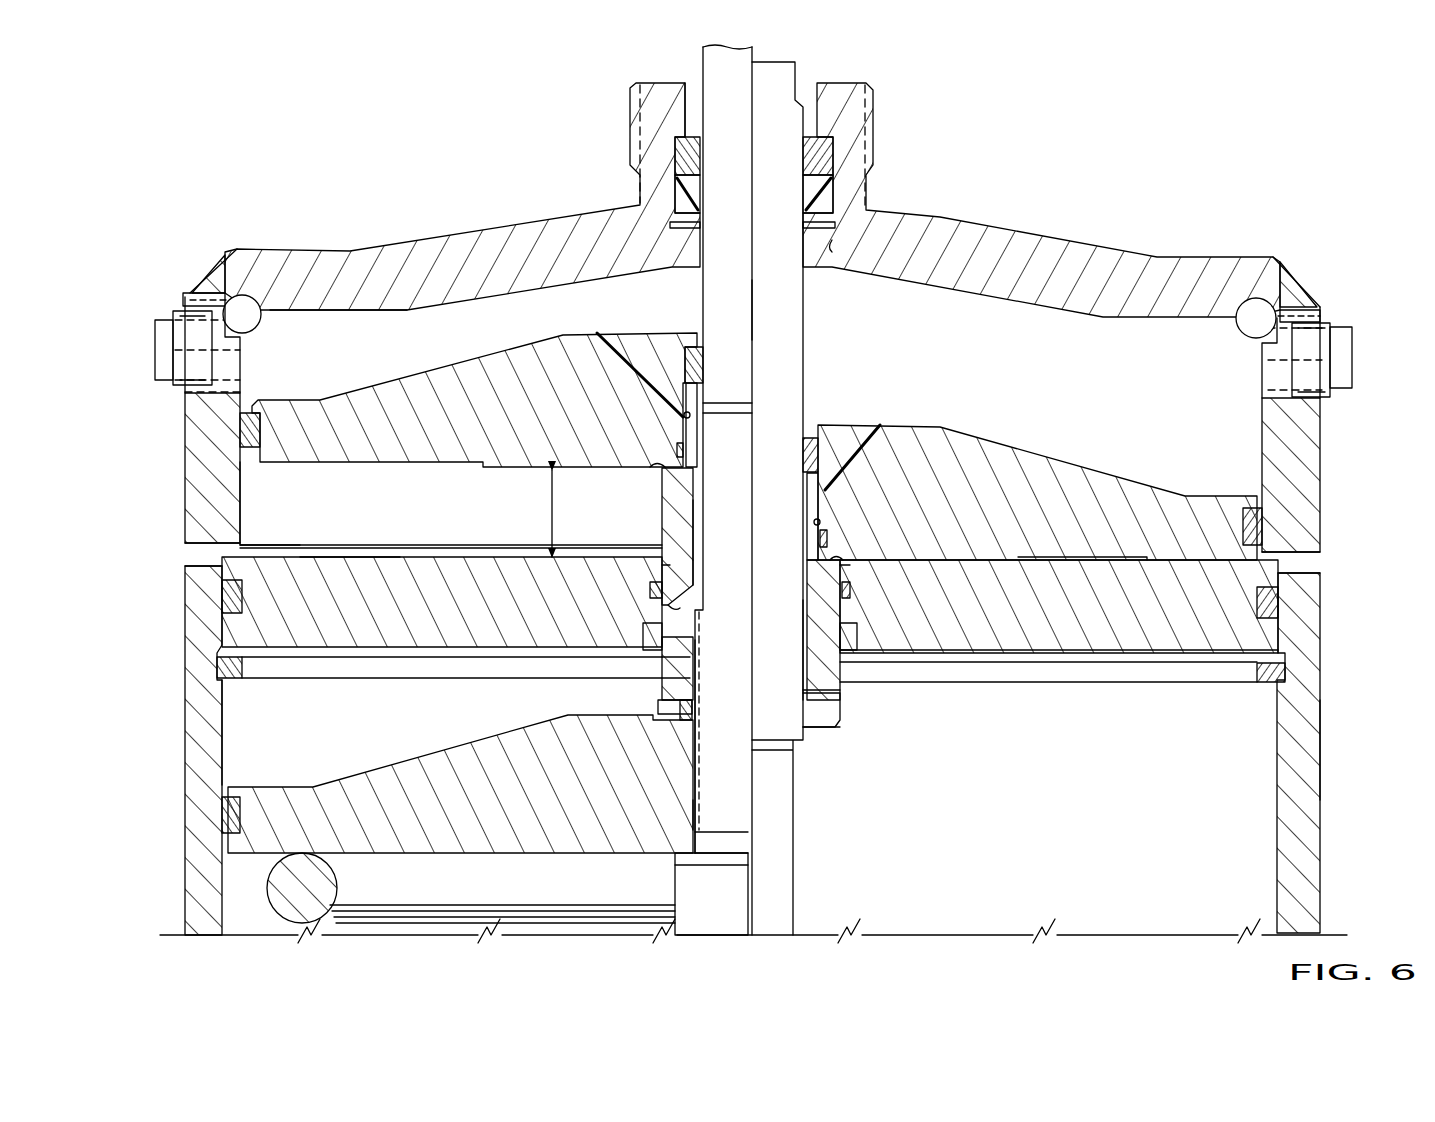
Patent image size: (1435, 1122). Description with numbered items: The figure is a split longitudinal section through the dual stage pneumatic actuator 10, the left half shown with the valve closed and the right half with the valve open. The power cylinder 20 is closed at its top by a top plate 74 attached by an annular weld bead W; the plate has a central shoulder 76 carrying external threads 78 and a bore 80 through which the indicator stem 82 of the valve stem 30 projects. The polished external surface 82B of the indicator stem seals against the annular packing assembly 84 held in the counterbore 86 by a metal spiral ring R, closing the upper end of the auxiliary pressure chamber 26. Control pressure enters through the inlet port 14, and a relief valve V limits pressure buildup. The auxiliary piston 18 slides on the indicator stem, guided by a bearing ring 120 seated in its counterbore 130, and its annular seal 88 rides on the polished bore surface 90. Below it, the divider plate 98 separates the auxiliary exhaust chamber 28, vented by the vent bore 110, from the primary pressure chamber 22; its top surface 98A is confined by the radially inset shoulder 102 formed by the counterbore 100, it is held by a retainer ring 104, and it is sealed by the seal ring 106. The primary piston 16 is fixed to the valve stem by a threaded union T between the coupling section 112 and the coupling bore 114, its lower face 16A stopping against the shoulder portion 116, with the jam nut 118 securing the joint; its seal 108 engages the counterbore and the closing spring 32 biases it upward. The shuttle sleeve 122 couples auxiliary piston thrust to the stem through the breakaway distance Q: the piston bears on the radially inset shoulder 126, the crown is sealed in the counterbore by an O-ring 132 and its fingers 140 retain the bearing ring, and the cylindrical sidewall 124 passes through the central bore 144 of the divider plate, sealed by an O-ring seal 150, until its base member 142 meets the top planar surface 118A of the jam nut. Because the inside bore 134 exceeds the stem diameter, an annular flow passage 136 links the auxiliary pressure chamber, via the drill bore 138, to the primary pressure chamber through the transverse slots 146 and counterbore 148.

The pneumatic actuator 10 is at (1228, 180).
The inlet port 14 is at (1355, 335).
The primary piston 16 is at (495, 742).
The lower face 16A is at (477, 853).
The auxiliary piston 18 is at (520, 352).
The power cylinder 20 is at (1322, 770).
The primary pressure chamber 22 is at (400, 730).
The auxiliary pressure chamber 26 is at (410, 355).
The auxiliary exhaust chamber 28 is at (410, 509).
The valve stem 30 is at (690, 893).
The closing spring 32 is at (265, 880).
The top plate 74 is at (440, 233).
The central shoulder 76 is at (858, 100).
The external threads 78 is at (625, 118).
The bore 80 is at (698, 83).
The indicator stem 82 is at (744, 126).
The external polished surface 82B is at (703, 292).
The annular packing assembly 84 is at (675, 152).
The counterbore 86 is at (832, 248).
The annular seal 88 is at (282, 382).
The internal cylindrical bore surface 90 is at (248, 490).
The divider plate 98 is at (475, 565).
The top surface 98A is at (362, 553).
The counterbore 100 is at (227, 730).
The radially inset shoulder 102 is at (320, 545).
The retainer ring 104 is at (245, 672).
The annular seal ring 106 is at (230, 600).
The annular seal 108 is at (228, 810).
The vent bore 110 is at (193, 557).
The intermediate coupling section 112 is at (740, 728).
The coupling bore 114 is at (693, 795).
The radially inset shoulder portion 116 is at (730, 845).
The jam nut 118 is at (662, 692).
The top planar surface 118A is at (662, 665).
The bearing ring 120 is at (705, 365).
The shuttle sleeve 122 is at (660, 500).
The cylindrical sidewall 124 is at (668, 525).
The radially inset shoulder 126 is at (657, 470).
The counterbore 130 is at (684, 415).
The O-ring 132 is at (677, 450).
The inside bore 134 is at (838, 700).
The annular flow passage 136 is at (703, 550).
The drill bore 138 is at (600, 340).
The fingers 140 is at (686, 400).
The base member 142 is at (835, 735).
The central bore 144 is at (663, 570).
The transverse slots 146 is at (675, 610).
The counterbore 148 is at (650, 636).
The O-ring seal 150 is at (655, 592).
The annular weld bead W is at (205, 280).
The relief valve V is at (165, 320).
The metal spiral ring R is at (668, 225).
The threaded union T is at (700, 770).
The travel distance Q is at (553, 513).